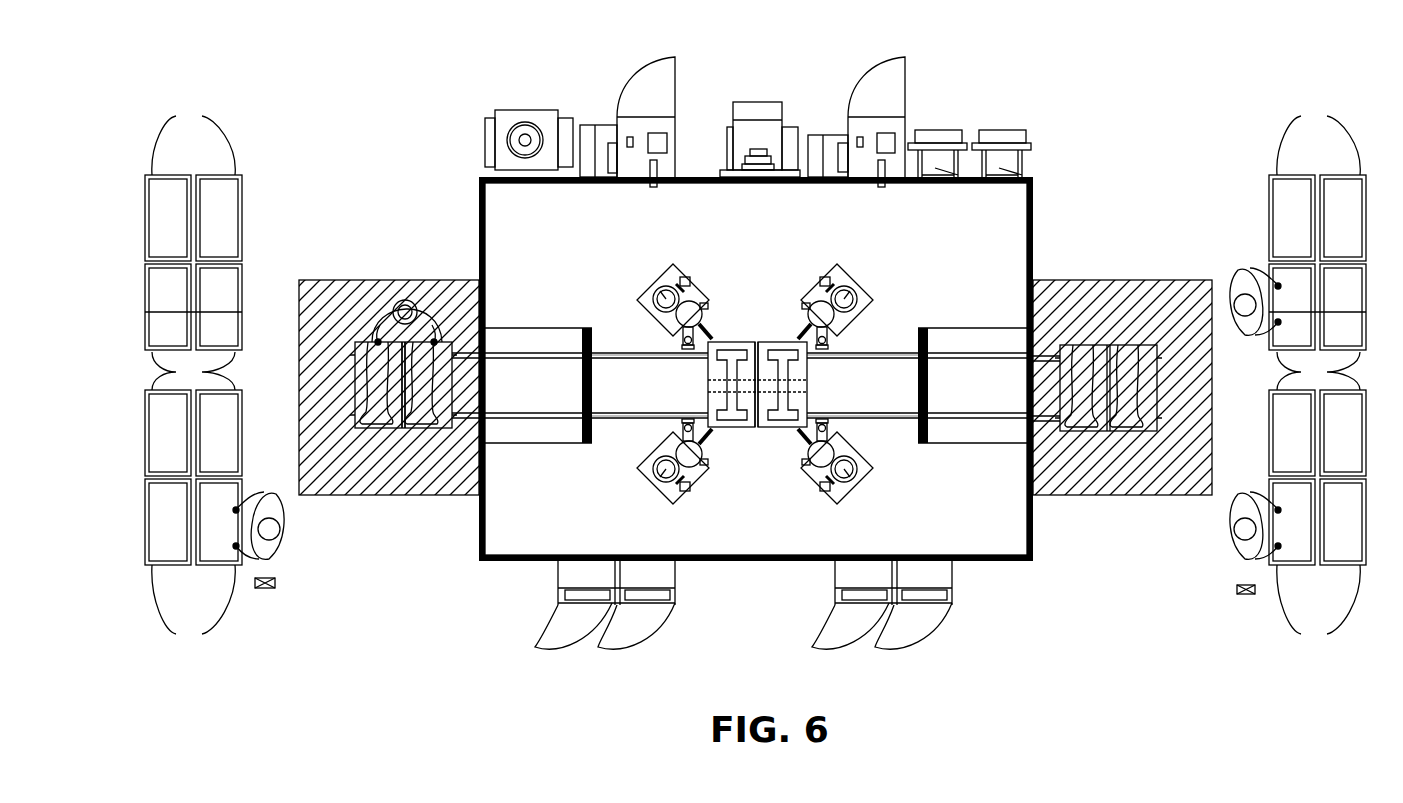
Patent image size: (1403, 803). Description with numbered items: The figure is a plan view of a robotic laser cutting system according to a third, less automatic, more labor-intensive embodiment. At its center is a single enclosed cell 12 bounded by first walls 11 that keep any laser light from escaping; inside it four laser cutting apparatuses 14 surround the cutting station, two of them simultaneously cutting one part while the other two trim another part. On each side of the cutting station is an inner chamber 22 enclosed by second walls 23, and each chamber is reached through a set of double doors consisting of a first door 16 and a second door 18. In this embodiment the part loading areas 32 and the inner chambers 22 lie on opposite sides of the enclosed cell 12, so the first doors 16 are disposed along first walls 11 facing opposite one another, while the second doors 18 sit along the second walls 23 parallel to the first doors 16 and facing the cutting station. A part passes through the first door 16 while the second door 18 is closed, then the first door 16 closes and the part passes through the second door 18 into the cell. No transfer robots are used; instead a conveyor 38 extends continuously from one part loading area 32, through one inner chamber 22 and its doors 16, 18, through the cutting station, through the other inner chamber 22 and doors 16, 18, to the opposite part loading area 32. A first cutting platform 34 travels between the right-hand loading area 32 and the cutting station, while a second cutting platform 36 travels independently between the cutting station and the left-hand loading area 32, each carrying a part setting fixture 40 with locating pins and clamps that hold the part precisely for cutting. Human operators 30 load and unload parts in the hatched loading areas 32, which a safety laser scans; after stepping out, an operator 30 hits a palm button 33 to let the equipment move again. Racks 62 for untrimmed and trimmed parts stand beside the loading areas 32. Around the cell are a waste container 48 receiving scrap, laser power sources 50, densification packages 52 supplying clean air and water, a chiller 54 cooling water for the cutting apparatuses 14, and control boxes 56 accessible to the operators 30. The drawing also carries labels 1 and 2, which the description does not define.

The coupling joint 1 is at (780, 430).
The space suit 2 is at (380, 430).
The first wall 11 is at (693, 177).
The enclosed cell 12 is at (1038, 223).
The laser cutting apparatus 14 is at (690, 312).
The first door 16 is at (486, 403).
The second door 18 is at (593, 375).
The inner chamber 22 is at (512, 448).
The second wall 23 is at (588, 328).
The human operator 30 is at (395, 312).
The part loading area 32 is at (420, 280).
The palm button 33 is at (264, 590).
The first cutting platform 34 is at (808, 395).
The second cutting platform 36 is at (448, 330).
The conveyor 38 is at (877, 418).
The part setting fixture 40 is at (398, 432).
The waste container 48 is at (748, 102).
The laser power source 50 is at (643, 82).
The densification package 52 is at (1015, 130).
The chiller 54 is at (532, 110).
The control box 56 is at (600, 620).
The rack 62 is at (755, 373).